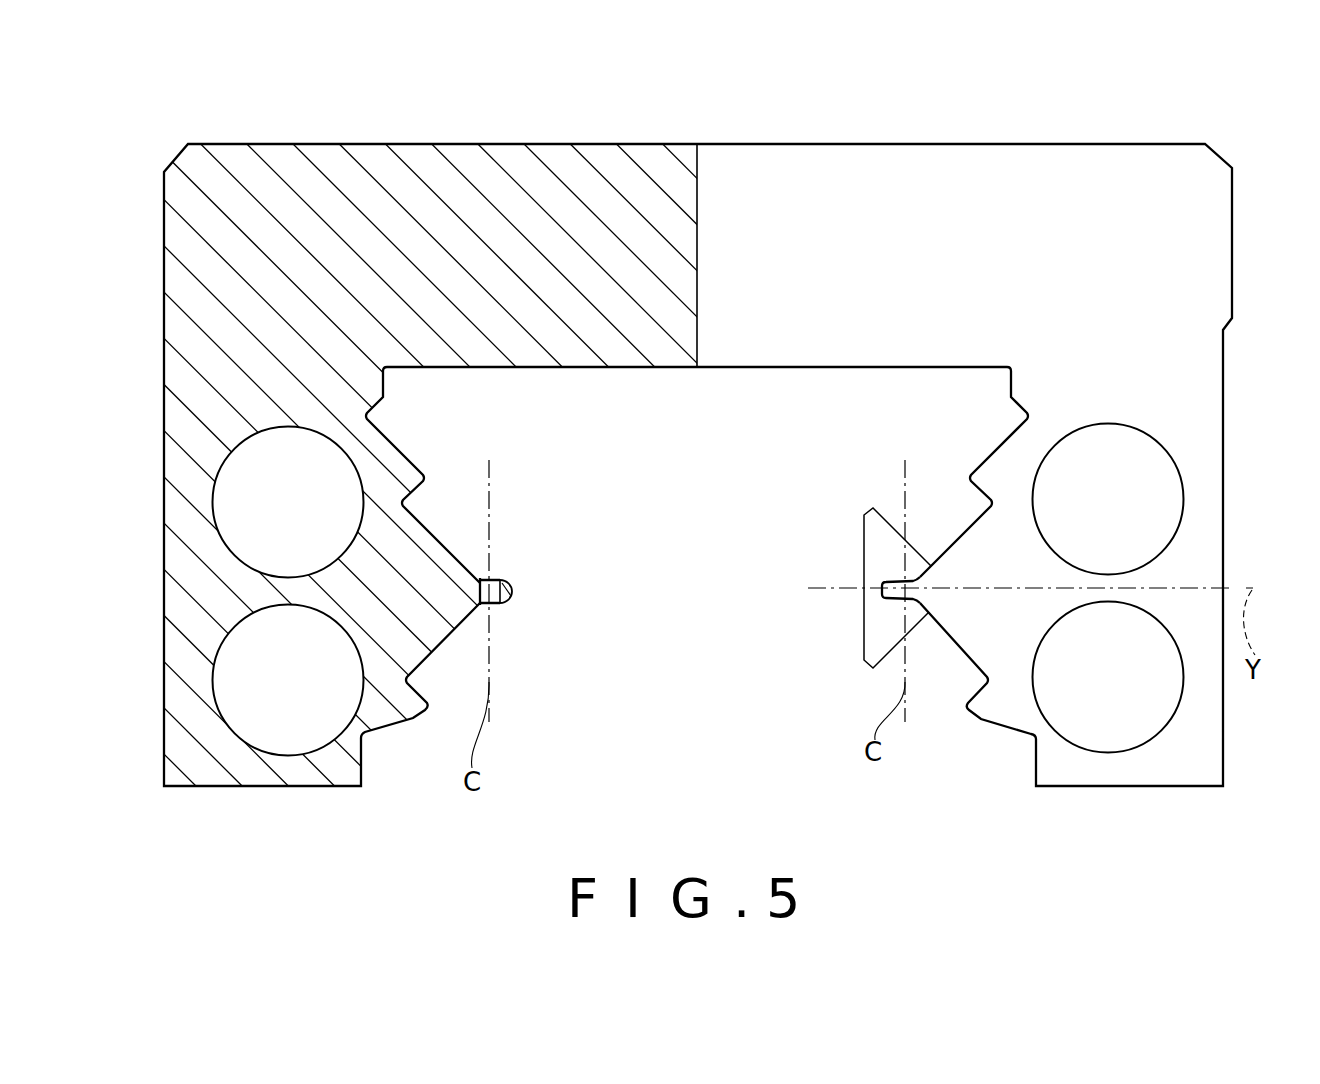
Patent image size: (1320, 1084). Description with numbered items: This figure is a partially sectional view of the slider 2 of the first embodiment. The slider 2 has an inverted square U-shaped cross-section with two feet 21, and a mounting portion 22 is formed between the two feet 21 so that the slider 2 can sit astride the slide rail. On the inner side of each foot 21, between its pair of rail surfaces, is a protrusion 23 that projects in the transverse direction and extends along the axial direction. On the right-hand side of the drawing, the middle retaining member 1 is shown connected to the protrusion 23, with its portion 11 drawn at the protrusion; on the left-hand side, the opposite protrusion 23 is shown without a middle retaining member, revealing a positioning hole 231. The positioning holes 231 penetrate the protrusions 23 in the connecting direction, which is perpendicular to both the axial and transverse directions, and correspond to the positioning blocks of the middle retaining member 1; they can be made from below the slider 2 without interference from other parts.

The middle retaining member 1 is at (872, 563).
The abutting portion of slider 11 is at (888, 596).
The slider 2 is at (712, 158).
The feet 21 is at (190, 500).
The mounting portion 22 is at (722, 465).
The protrusion 23 is at (513, 592).
The positioning holes 231 is at (497, 603).